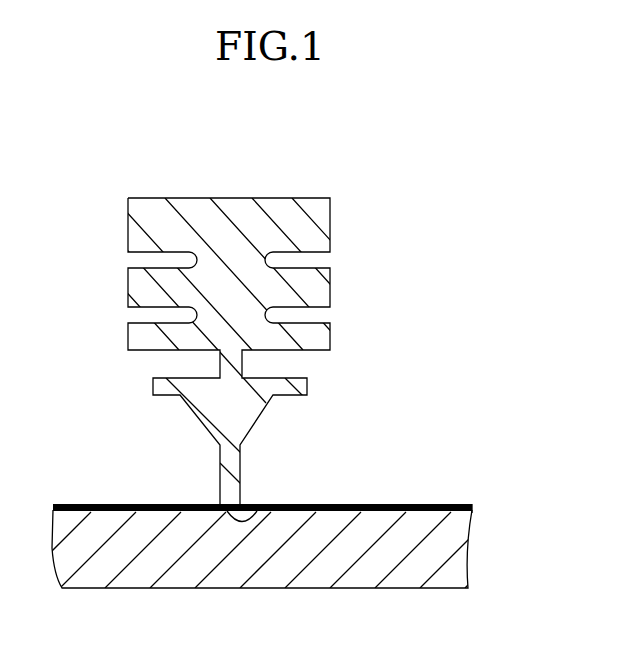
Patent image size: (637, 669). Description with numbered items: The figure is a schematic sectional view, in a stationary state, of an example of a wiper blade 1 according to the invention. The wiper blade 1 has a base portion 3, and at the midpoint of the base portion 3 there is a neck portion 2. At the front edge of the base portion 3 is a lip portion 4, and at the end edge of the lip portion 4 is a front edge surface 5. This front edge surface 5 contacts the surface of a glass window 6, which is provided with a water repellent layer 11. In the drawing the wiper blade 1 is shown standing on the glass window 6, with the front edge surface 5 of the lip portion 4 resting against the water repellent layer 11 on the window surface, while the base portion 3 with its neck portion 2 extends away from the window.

The wiper blade 1 is at (242, 322).
The neck portion 2 is at (232, 360).
The base portion 3 is at (288, 210).
The lip portion 4 is at (237, 463).
The front edge surface 5 is at (263, 503).
The glass window 6 is at (378, 521).
The water repellent layer 11 is at (435, 502).